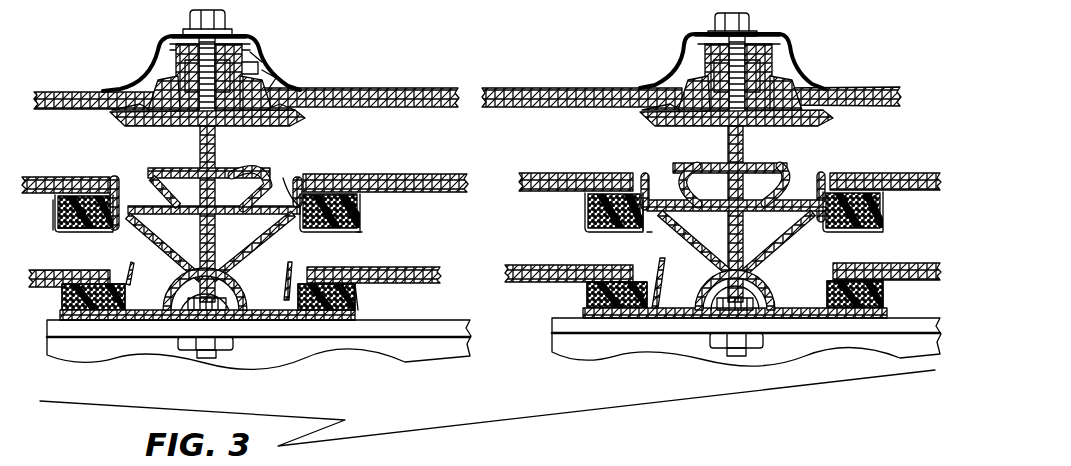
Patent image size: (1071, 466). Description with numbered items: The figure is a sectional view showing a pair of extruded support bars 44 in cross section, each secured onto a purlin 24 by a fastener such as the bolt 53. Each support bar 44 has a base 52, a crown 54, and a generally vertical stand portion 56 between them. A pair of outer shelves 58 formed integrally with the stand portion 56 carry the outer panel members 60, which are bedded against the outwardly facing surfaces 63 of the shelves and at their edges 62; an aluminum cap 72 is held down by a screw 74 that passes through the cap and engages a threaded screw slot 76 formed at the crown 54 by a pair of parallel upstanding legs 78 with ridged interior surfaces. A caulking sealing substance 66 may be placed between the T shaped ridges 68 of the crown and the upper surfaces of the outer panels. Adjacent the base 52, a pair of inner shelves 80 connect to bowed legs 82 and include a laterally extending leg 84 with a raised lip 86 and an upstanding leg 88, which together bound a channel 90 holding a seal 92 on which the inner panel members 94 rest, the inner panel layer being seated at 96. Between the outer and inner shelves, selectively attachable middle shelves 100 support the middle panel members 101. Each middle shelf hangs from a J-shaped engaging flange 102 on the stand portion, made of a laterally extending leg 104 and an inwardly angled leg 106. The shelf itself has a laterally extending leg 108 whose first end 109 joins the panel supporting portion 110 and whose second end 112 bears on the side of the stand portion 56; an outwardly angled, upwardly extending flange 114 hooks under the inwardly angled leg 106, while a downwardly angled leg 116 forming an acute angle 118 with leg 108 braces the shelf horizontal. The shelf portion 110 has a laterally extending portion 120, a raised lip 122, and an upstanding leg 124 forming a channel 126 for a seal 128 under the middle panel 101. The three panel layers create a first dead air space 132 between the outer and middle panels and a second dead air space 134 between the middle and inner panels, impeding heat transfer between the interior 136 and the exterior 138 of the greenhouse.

The purlin 24 is at (442, 330).
The support bar 44 is at (238, 27).
The base 52 is at (233, 274).
The bolt 53 is at (213, 358).
The crown 54 is at (245, 66).
The stand portion 56 is at (218, 155).
The outer shelf 58 is at (300, 125).
The outer panel member 60 is at (388, 90).
The wedge 62 is at (140, 122).
The outwardly facing surface 63 is at (278, 120).
The sealing substance 66 is at (277, 77).
The T shaped ridge 68 is at (258, 67).
The aluminum cap 72 is at (252, 38).
The screw 74 is at (190, 18).
The threaded screw slot 76 is at (182, 127).
The upstanding leg 78 is at (262, 56).
The inner shelf 80 is at (331, 322).
The bowed leg 82 is at (166, 298).
The laterally extending leg 84 is at (287, 322).
The raised lip 86 is at (358, 306).
The upstanding leg 88 is at (289, 266).
The channel 90 is at (331, 300).
The seal 92 is at (357, 290).
The inner panel member 94 is at (428, 272).
The lower panel 96 is at (47, 287).
The middle shelf 100 is at (78, 230).
The middle panel member 101 is at (437, 175).
The J-shaped engaging flange 102 is at (212, 158).
The laterally extending leg 104 is at (192, 168).
The inwardly angled leg 106 is at (112, 168).
The laterally extending leg 108 is at (300, 176).
The first end 109 is at (112, 233).
The panel supporting portion 110 is at (302, 178).
The second end 112 is at (207, 214).
The upwardly extending flange 114 is at (148, 178).
The downwardly angled leg 116 is at (137, 265).
The acute angle 118 is at (255, 215).
The laterally extending portion 120 is at (348, 234).
The raised lip 122 is at (588, 214).
The upstanding leg 124 is at (662, 172).
The channel 126 is at (318, 186).
The seal 128 is at (60, 205).
The first dead air space 132 is at (531, 146).
The second dead air space 134 is at (529, 240).
The interior 136 is at (536, 375).
The exterior 138 is at (478, 46).